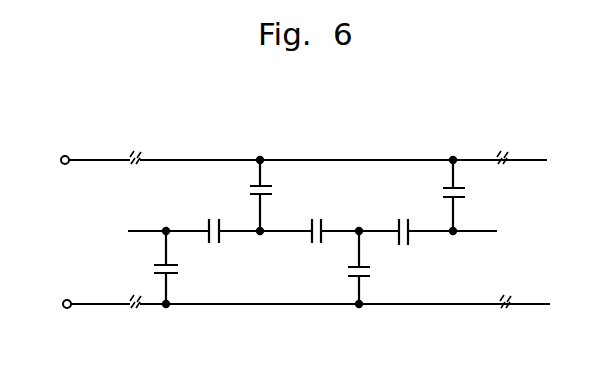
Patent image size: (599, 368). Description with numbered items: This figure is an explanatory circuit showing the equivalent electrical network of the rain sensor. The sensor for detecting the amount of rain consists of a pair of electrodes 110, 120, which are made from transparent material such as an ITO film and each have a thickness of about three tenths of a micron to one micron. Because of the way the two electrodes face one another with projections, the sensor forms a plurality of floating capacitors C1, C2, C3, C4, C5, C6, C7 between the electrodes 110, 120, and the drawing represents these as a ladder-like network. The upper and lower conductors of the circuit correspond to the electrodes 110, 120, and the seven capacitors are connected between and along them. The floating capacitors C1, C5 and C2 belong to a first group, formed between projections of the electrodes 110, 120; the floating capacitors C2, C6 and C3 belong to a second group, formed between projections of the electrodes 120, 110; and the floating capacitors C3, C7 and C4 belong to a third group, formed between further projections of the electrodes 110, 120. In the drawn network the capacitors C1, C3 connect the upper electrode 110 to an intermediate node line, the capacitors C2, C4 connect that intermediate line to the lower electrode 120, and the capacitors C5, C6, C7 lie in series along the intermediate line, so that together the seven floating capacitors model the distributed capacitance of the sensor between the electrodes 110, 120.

The electrode 110 is at (186, 156).
The electrode 120 is at (245, 305).
The floating capacitor C1 is at (275, 191).
The floating capacitor C2 is at (180, 269).
The floating capacitor C3 is at (468, 196).
The floating capacitor C4 is at (372, 271).
The floating capacitor C5 is at (218, 217).
The floating capacitor C6 is at (318, 246).
The floating capacitor C7 is at (401, 217).